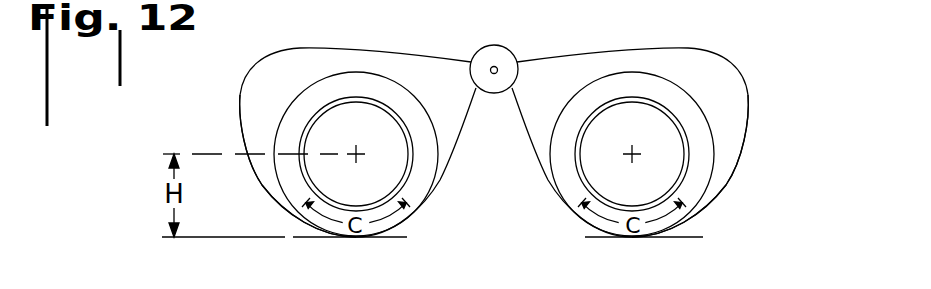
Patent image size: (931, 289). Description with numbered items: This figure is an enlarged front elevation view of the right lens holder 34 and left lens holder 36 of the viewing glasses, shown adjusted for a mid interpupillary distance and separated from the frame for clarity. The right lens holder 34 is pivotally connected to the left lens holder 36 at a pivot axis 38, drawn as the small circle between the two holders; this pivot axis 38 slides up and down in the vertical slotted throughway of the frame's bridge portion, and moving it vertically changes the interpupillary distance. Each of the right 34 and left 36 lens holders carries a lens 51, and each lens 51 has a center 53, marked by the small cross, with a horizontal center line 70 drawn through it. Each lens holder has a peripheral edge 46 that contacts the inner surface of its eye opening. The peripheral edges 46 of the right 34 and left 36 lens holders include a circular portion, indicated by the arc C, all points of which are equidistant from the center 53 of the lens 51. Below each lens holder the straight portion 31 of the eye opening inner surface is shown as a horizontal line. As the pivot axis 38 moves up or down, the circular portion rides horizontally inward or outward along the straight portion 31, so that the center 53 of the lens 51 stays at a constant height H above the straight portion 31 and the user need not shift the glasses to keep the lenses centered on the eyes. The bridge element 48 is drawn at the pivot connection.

The horizontal straight portion 31 is at (361, 238).
The right lens holder 34 is at (279, 95).
The left lens holder 36 is at (723, 88).
The pivot axis 38 is at (497, 73).
The peripheral edge 46 is at (272, 188).
The bridge pivot boss 48 is at (483, 67).
The lens 51 is at (327, 147).
The center 53 is at (363, 156).
The horizontal center line 70 is at (206, 154).